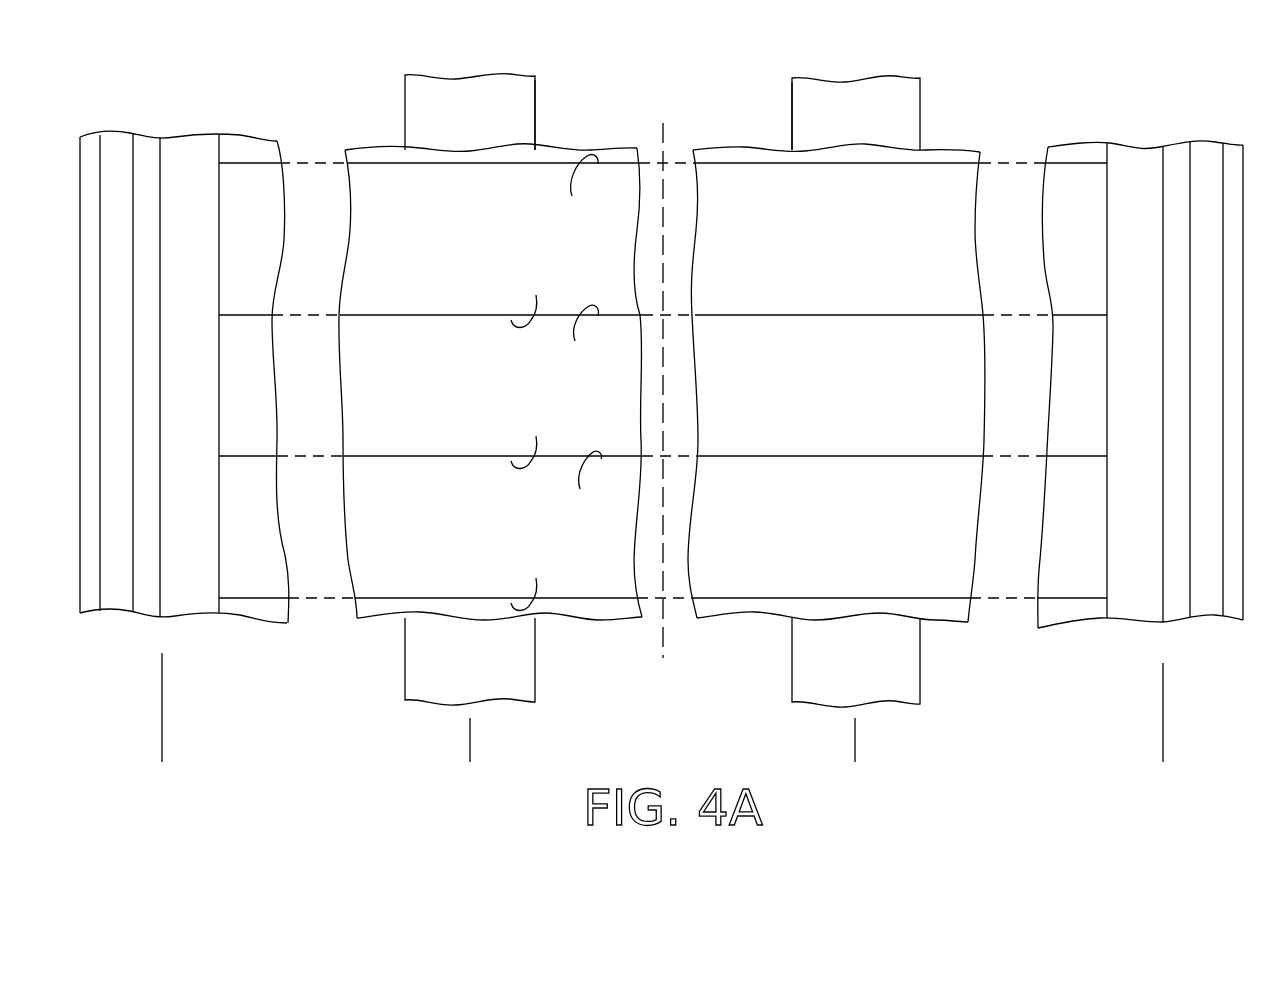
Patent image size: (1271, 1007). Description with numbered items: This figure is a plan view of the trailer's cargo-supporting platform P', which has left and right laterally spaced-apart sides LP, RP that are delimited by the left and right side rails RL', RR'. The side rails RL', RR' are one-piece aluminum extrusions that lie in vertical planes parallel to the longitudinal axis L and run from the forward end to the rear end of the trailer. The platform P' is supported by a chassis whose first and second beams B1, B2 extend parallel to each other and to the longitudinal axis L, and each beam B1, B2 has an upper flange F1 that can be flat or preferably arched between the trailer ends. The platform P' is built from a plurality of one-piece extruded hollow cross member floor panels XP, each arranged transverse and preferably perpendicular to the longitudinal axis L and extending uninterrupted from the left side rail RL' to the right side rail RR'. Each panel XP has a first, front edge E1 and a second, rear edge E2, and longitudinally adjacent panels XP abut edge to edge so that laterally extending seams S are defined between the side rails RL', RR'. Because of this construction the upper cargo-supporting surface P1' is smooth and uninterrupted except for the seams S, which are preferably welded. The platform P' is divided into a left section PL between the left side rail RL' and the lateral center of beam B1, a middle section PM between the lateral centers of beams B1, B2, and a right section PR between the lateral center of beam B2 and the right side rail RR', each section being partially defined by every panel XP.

The left side of platform LP is at (197, 384).
The right side of platform RP is at (1144, 384).
The left side rail RL' is at (119, 412).
The right side rail RR' is at (1214, 416).
The upper flange F1 is at (478, 88).
The first beam B1 is at (548, 100).
The second beam B2 is at (778, 102).
The middle section PM is at (847, 749).
The upper surface P1' is at (547, 348).
The cargo-supporting platform P' is at (859, 349).
The first edge E1 is at (582, 334).
The second edge E2 is at (532, 440).
The cross member floor panel XP is at (493, 352).
The seam S is at (433, 318).
The longitudinal axis L is at (661, 644).
The left section PL is at (462, 749).
The right section PR is at (1155, 749).